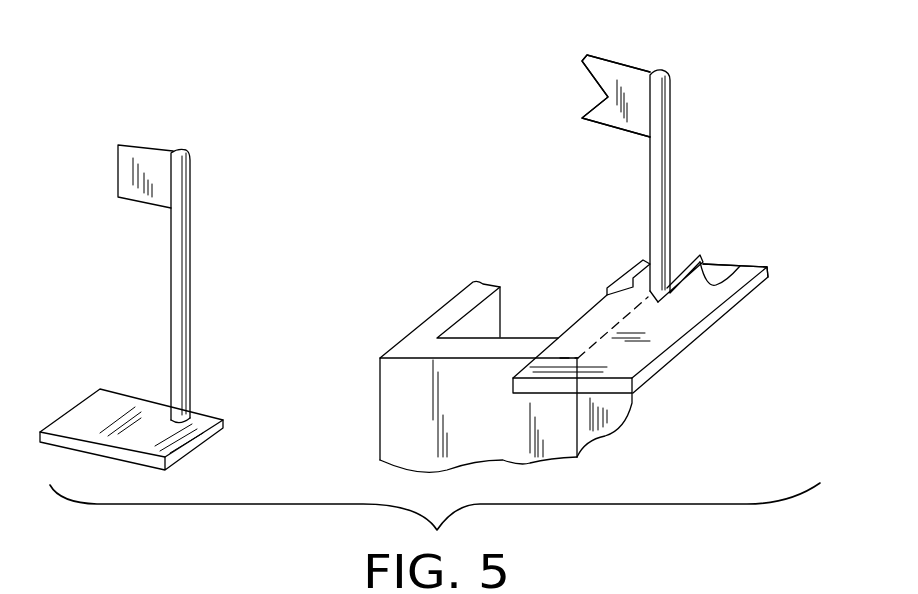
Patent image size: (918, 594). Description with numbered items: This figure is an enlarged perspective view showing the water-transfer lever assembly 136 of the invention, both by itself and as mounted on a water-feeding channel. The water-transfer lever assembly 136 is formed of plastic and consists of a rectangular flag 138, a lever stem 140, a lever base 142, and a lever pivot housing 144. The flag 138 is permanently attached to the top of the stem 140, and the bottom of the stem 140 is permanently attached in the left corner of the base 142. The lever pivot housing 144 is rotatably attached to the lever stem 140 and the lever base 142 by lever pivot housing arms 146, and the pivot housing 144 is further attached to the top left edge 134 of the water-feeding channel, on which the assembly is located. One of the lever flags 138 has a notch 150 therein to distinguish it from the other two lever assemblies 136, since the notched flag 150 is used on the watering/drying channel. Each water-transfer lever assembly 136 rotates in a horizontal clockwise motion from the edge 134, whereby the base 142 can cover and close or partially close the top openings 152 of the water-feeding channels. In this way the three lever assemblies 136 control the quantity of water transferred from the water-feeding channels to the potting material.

The top left edge 134 is at (573, 337).
The water-transfer lever assembly 136 is at (678, 172).
The rectangular flag 138 is at (130, 182).
The lever stem 140 is at (178, 277).
The lever base 142 is at (83, 410).
The lever pivot housing 144 is at (690, 258).
The lever pivot housing arms 146 is at (760, 264).
The notch 150 is at (608, 97).
The top openings 152 is at (482, 322).